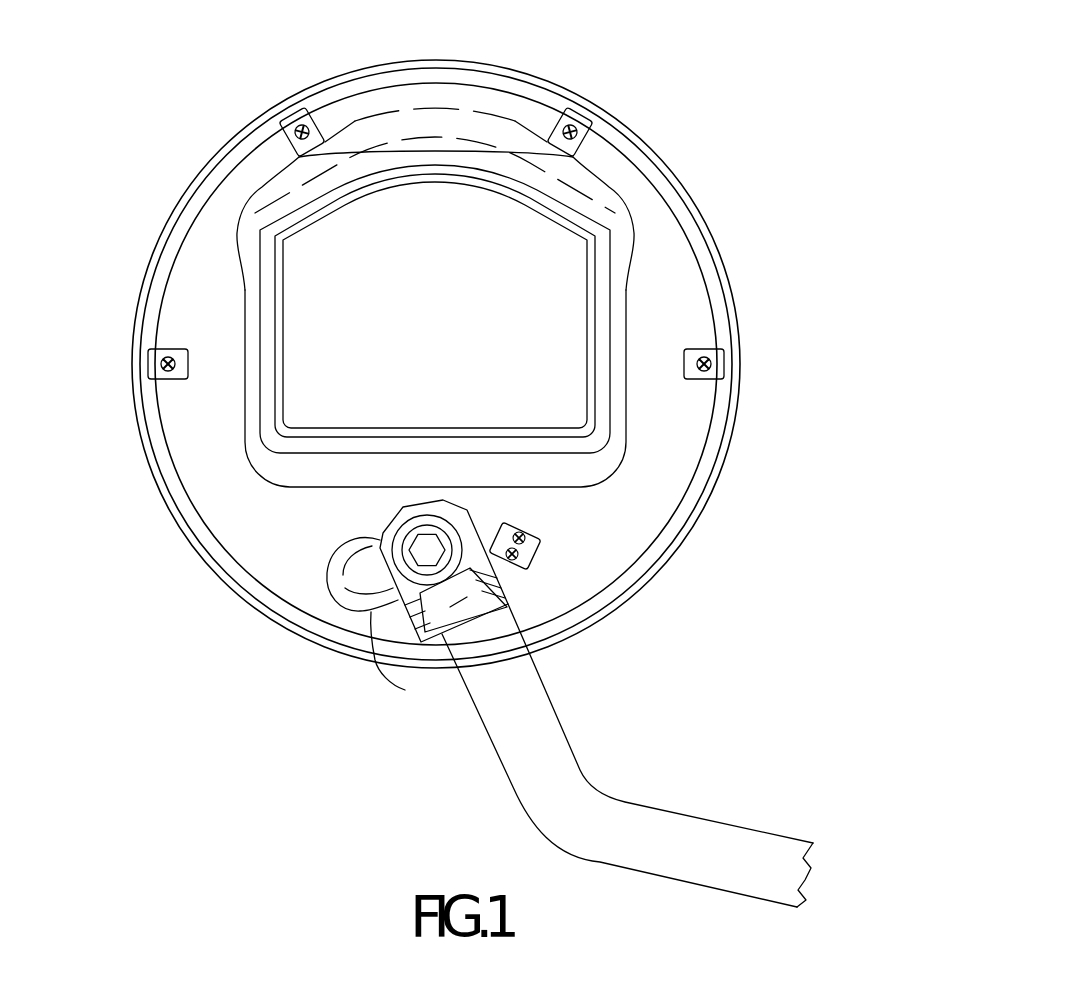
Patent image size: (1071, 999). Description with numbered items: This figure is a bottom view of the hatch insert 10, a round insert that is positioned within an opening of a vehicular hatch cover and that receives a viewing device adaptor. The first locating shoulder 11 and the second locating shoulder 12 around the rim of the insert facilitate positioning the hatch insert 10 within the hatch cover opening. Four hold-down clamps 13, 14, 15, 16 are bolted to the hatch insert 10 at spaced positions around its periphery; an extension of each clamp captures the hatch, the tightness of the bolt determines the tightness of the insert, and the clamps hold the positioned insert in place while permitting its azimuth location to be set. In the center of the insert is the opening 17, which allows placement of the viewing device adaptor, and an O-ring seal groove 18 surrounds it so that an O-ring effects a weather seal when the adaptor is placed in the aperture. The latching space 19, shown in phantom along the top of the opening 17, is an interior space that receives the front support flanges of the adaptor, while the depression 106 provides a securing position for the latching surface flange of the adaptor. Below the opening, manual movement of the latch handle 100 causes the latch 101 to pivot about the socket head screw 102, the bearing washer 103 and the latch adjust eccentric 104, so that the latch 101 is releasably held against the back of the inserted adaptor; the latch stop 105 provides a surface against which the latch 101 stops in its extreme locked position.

The hatch insert 10 is at (170, 578).
The first locating shoulder 11 is at (267, 618).
The second locating shoulder 12 is at (331, 636).
The hold-down clamp 13 is at (157, 356).
The hold-down clamp 14 is at (298, 124).
The hold-down clamp 15 is at (574, 120).
The hold-down clamp 16 is at (727, 357).
The opening 17 is at (447, 322).
The O-ring seal groove 18 is at (340, 445).
The latching space 19 is at (483, 128).
The latch handle 100 is at (696, 820).
The latch 101 is at (402, 662).
The socket head screw 102 is at (420, 543).
The bearing washer 103 is at (465, 513).
The latch adjust eccentric 104 is at (376, 552).
The latch stop 105 is at (545, 542).
The depression 106 is at (487, 432).